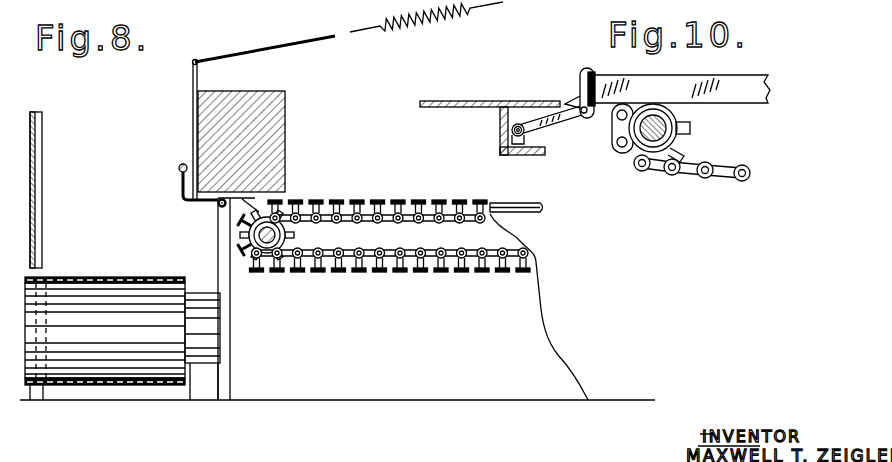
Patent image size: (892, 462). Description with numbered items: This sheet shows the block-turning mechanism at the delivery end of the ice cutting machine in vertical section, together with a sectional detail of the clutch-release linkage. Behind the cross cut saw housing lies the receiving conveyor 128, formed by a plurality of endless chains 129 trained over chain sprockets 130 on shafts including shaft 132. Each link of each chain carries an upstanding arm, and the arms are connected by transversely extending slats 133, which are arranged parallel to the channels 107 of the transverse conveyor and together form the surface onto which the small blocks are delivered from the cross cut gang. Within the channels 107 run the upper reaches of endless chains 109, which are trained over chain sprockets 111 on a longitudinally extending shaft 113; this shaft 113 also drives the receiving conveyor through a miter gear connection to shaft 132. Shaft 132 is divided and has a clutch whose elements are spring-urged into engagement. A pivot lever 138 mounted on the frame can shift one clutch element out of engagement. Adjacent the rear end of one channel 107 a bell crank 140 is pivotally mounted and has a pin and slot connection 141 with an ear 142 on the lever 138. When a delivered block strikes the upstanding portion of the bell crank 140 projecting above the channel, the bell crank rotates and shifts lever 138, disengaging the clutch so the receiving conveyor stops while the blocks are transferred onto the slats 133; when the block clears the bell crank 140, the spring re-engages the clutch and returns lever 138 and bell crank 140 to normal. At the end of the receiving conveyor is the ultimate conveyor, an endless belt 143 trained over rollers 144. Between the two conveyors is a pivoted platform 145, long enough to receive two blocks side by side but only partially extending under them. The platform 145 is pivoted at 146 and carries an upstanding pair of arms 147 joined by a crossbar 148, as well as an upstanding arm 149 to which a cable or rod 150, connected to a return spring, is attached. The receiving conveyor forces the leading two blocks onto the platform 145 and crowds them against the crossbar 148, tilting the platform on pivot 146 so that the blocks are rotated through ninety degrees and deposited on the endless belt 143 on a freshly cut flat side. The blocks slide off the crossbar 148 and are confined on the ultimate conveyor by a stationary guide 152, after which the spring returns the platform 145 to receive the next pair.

In FIG. 10, the channel 107 is at (745, 83).
In FIG. 10, the endless chain 109 is at (728, 175).
In FIG. 10, the chain sprocket 111 is at (682, 153).
In FIG. 10, the shaft 113 is at (660, 126).
In FIG. 8, the receiving conveyor 128 is at (494, 195).
In FIG. 10, the receiving conveyor 128 is at (493, 95).
In FIG. 8, the endless chain 129 is at (410, 217).
In FIG. 8, the chain sprocket 130 is at (284, 236).
In FIG. 8, the shaft 132 is at (270, 246).
In FIG. 8, the slat 133 is at (360, 202).
In FIG. 10, the pivot lever 138 is at (528, 146).
In FIG. 10, the bell crank 140 is at (584, 118).
In FIG. 10, the pin and slot connection 141 is at (521, 124).
In FIG. 10, the ear 142 is at (504, 141).
In FIG. 8, the endless belt 143 is at (130, 276).
In FIG. 8, the roller 144 is at (88, 358).
In FIG. 8, the pivoted platform 145 is at (240, 193).
In FIG. 8, the pivot 146 is at (220, 207).
In FIG. 8, the upstanding arm 147 is at (183, 191).
In FIG. 8, the crossbar 148 is at (180, 166).
In FIG. 8, the upstanding arm 149 is at (195, 96).
In FIG. 8, the cable or rod 150 is at (301, 42).
In FIG. 8, the stationary guide 152 is at (38, 160).